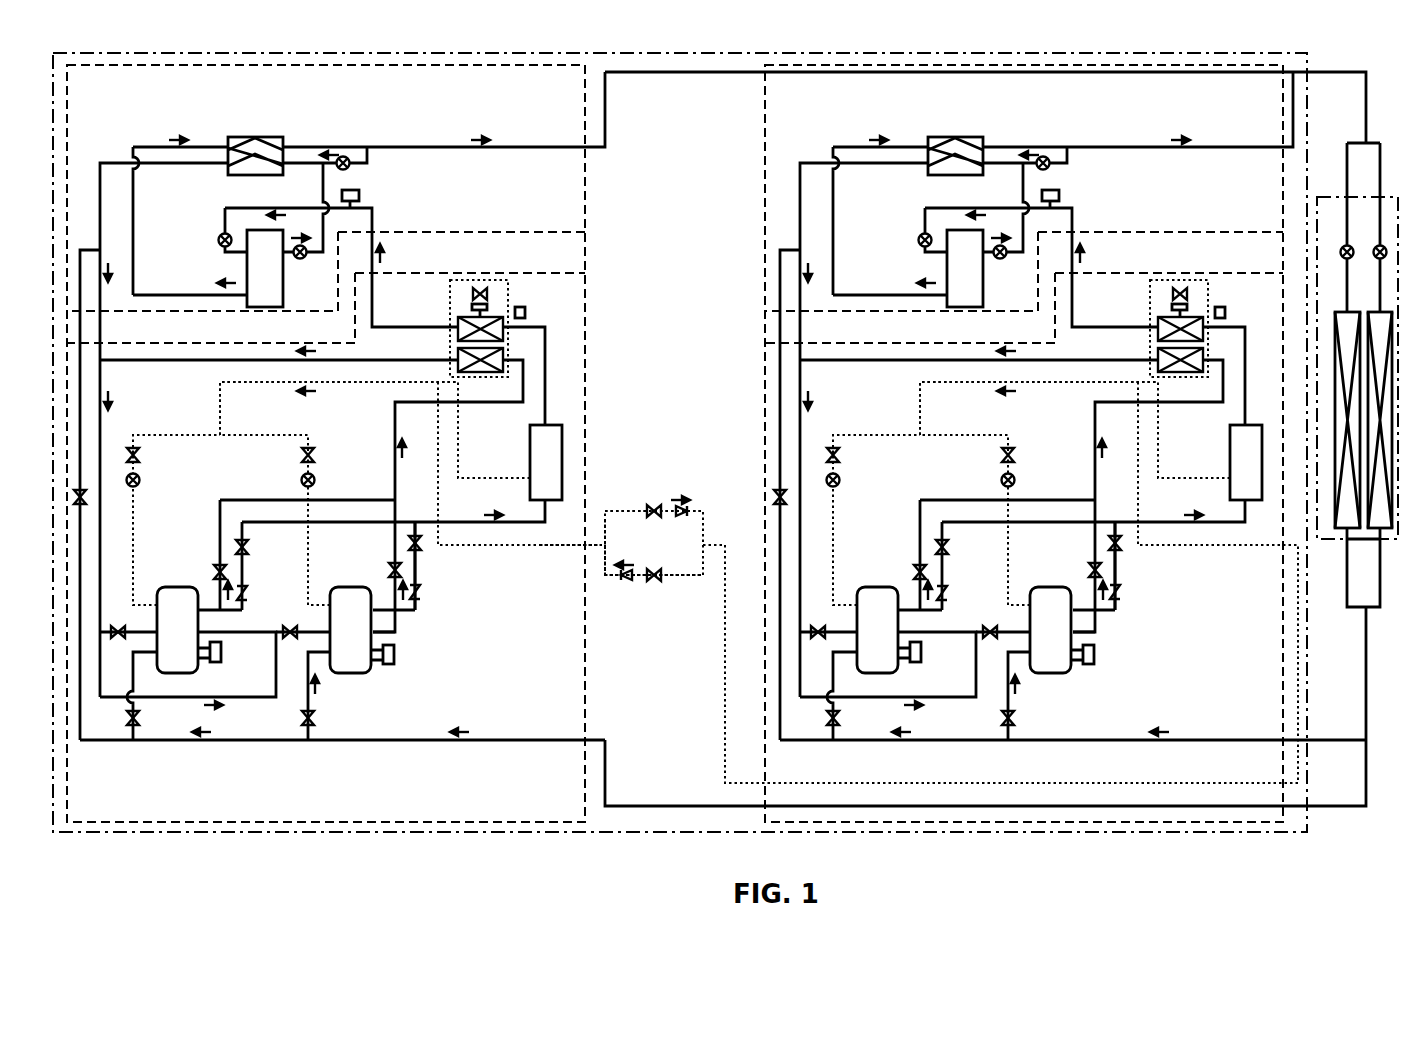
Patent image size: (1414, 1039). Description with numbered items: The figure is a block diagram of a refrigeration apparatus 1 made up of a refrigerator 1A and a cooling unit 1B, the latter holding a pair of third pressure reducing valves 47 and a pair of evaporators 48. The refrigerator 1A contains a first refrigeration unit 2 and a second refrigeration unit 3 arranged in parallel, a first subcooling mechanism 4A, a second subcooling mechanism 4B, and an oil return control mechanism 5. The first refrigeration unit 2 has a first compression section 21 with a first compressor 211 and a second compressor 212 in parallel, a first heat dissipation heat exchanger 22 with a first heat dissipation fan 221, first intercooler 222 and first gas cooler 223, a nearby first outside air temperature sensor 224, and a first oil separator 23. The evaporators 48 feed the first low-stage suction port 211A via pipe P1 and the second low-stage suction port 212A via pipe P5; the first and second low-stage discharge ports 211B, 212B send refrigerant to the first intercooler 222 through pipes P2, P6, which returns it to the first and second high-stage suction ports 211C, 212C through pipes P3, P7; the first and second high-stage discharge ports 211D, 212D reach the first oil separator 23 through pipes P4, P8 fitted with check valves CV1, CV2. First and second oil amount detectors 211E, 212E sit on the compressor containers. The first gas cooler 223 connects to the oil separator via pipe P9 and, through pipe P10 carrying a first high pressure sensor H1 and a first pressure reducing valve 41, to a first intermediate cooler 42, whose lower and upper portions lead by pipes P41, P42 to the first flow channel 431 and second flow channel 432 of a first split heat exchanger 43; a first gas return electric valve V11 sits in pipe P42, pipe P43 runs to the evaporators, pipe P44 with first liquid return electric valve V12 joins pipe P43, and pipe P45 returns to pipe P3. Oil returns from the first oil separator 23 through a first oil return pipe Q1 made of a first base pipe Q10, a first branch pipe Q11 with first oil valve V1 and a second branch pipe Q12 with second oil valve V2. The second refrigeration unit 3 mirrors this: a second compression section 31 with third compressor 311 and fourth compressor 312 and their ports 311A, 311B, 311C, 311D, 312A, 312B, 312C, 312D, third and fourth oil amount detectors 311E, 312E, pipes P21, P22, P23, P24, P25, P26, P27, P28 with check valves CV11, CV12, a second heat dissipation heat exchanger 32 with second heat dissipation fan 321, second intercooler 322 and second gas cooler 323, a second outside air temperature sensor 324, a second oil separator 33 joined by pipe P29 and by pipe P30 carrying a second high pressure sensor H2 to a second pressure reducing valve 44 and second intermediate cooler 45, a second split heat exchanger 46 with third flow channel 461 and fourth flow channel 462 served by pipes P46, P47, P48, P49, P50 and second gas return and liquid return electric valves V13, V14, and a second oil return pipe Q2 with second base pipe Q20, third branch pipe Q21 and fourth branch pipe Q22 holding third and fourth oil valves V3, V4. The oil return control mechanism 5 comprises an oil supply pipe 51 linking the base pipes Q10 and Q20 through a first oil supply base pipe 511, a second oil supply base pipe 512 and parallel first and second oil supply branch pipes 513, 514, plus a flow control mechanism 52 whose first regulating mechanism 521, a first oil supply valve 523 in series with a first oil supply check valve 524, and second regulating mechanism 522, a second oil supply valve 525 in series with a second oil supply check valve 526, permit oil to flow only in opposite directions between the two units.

The refrigeration apparatus 1 is at (104, 47).
The refrigerator 1A is at (343, 62).
The cooling unit 1B is at (1333, 197).
The first refrigeration unit 2 is at (590, 326).
The second refrigeration unit 3 is at (763, 356).
The first subcooling mechanism 4A is at (527, 62).
The second subcooling mechanism 4B is at (1210, 62).
The oil return control mechanism 5 is at (868, 582).
The oil supply pipe 51 is at (503, 556).
The first oil supply base pipe 511 is at (531, 551).
The second oil supply base pipe 512 is at (723, 708).
The first oil supply branch pipe 513 is at (607, 516).
The second oil supply branch pipe 514 is at (607, 578).
The flow control mechanism 52 is at (665, 549).
The first regulating mechanism 521 is at (651, 500).
The second regulating mechanism 522 is at (651, 590).
The first oil supply valve 523 is at (652, 519).
The first oil supply check valve 524 is at (684, 519).
The second oil supply valve 525 is at (659, 582).
The second oil supply check valve 526 is at (628, 582).
The first compression section 21 is at (192, 620).
The first compressor 211 is at (172, 605).
The first low-stage suction port 211A is at (148, 657).
The first low-stage discharge port 211B is at (200, 636).
The first high-stage suction port 211C is at (150, 631).
The first high-stage discharge port 211D is at (207, 605).
The first oil amount detector 211E is at (215, 664).
The second compressor 212 is at (358, 631).
The second low-stage suction port 212A is at (322, 660).
The second low-stage discharge port 212B is at (376, 635).
The second high-stage suction port 212C is at (313, 620).
The second high-stage discharge port 212D is at (372, 605).
The second oil amount detector 212E is at (390, 665).
The first heat dissipation heat exchanger 22 is at (468, 306).
The first heat dissipation fan 221 is at (480, 289).
The first intercooler 222 is at (458, 356).
The first gas cooler 223 is at (496, 320).
The first outside air temperature sensor 224 is at (526, 312).
The first oil separator 23 is at (555, 425).
The check valve CV1 is at (260, 608).
The check valve CV2 is at (434, 608).
The first oil valve V1 is at (142, 481).
The second oil valve V2 is at (316, 481).
The first gas return electric valve V11 is at (302, 259).
The first liquid return electric valve V12 is at (350, 167).
The first oil return pipe Q1 is at (214, 393).
The first base pipe Q10 is at (262, 387).
The first branch pipe Q11 is at (158, 433).
The second branch pipe Q12 is at (300, 433).
The first pressure reducing valve 41 is at (218, 241).
The first intermediate cooler 42 is at (283, 298).
The first split heat exchanger 43 is at (255, 128).
The first flow channel 431 is at (242, 147).
The second flow channel 432 is at (270, 160).
The first high pressure sensor H1 is at (360, 195).
The pipe P1 is at (493, 740).
The pipe P2 is at (393, 428).
The pipe P3 is at (104, 423).
The pipe P4 is at (455, 521).
The pipe P5 is at (303, 733).
The pipe P6 is at (398, 513).
The pipe P7 is at (130, 704).
The pipe P8 is at (422, 578).
The pipe P9 is at (547, 352).
The pipe P10 is at (374, 297).
The pipe P41 is at (135, 231).
The pipe P42 is at (312, 147).
The pipe P43 is at (463, 146).
The pipe P44 is at (368, 163).
The pipe P45 is at (108, 162).
The second compression section 31 is at (897, 620).
The third compressor 311 is at (872, 605).
The third low-stage suction port 311A is at (859, 696).
The third low-stage discharge port 311B is at (888, 662).
The third high-stage suction port 311C is at (828, 624).
The third high-stage discharge port 311D is at (906, 555).
The third oil amount detector 311E is at (929, 669).
The fourth compressor 312 is at (1064, 631).
The fourth low-stage suction port 312A is at (1038, 696).
The fourth low-stage discharge port 312B is at (1115, 637).
The fourth high-stage suction port 312C is at (994, 614).
The fourth high-stage discharge port 312D is at (1080, 566).
The fourth oil amount detector 312E is at (1103, 673).
The second heat dissipation heat exchanger 32 is at (1168, 306).
The second heat dissipation fan 321 is at (1181, 276).
The second intercooler 322 is at (1143, 356).
The second gas cooler 323 is at (1205, 296).
The second outside air temperature sensor 324 is at (1245, 304).
The second oil separator 33 is at (1254, 447).
The check valve CV11 is at (966, 608).
The check valve CV12 is at (1140, 608).
The third oil valve V3 is at (855, 481).
The fourth oil valve V4 is at (1029, 481).
The second gas return electric valve V13 is at (1014, 269).
The second liquid return electric valve V14 is at (1101, 174).
The second oil return pipe Q2 is at (1013, 403).
The second base pipe Q20 is at (1075, 430).
The third branch pipe Q21 is at (873, 503).
The fourth branch pipe Q22 is at (975, 503).
The second pressure reducing valve 44 is at (914, 230).
The second intermediate cooler 45 is at (926, 270).
The second split heat exchanger 46 is at (955, 128).
The third flow channel 461 is at (947, 128).
The fourth flow channel 462 is at (963, 136).
The second high pressure sensor H2 is at (1079, 194).
The third pressure reducing valve 47 is at (1377, 247).
The evaporator 48 is at (1376, 311).
The pipe P21 is at (1073, 724).
The pipe P22 is at (1139, 430).
The pipe P23 is at (812, 495).
The pipe P24 is at (1093, 506).
The pipe P25 is at (984, 724).
The pipe P26 is at (1106, 555).
The pipe P27 is at (786, 673).
The pipe P28 is at (1154, 566).
The pipe P29 is at (1243, 370).
The pipe P30 is at (1041, 267).
The pipe P46 is at (857, 221).
The pipe P47 is at (1041, 132).
The pipe P48 is at (1196, 109).
The pipe P49 is at (1049, 158).
The pipe P50 is at (863, 411).